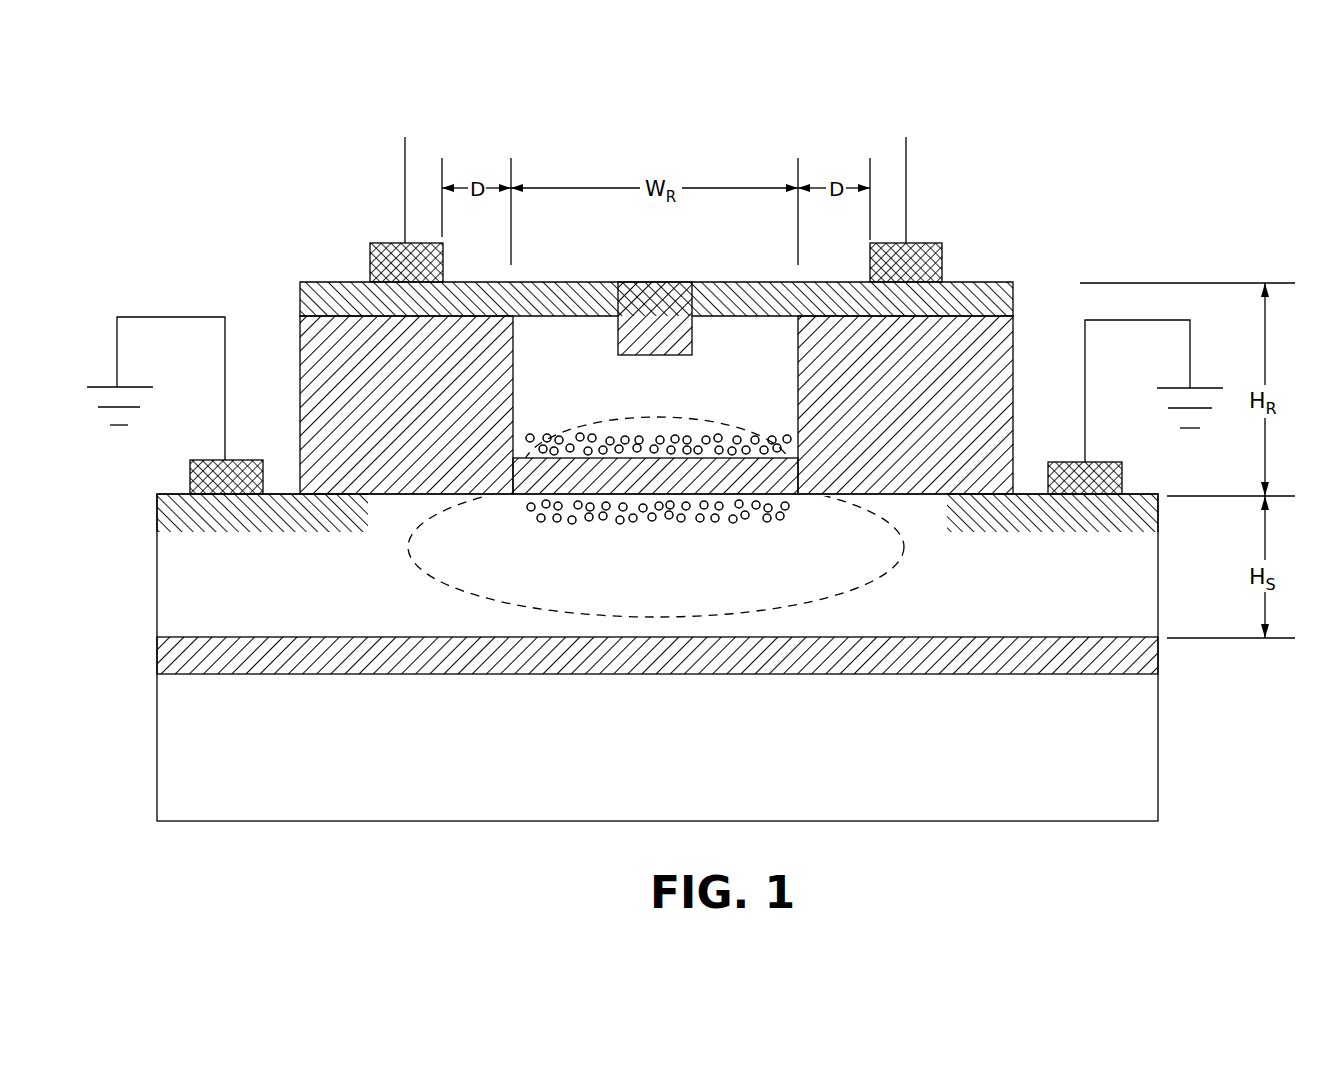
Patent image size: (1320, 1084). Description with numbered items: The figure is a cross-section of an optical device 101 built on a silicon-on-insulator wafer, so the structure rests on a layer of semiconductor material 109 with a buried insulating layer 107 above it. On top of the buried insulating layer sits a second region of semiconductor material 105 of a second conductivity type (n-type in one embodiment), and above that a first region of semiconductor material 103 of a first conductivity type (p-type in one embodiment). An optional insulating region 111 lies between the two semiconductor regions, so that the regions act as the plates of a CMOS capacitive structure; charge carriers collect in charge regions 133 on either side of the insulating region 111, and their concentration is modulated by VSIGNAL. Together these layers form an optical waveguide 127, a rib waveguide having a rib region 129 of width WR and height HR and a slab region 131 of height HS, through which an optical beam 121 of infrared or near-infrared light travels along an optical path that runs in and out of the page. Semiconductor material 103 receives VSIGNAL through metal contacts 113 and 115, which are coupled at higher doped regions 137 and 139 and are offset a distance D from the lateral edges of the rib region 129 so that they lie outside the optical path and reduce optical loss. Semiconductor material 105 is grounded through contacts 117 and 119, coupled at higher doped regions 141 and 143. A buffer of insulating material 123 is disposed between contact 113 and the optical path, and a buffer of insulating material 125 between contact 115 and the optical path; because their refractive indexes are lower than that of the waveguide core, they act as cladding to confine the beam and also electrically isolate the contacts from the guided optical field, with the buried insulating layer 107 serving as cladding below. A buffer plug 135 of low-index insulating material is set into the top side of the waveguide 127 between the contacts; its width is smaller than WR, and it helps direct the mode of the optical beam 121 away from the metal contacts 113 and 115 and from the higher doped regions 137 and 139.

The optical device 101 is at (1068, 132).
The first region of semiconductor material 103 is at (587, 348).
The second region of semiconductor material 105 is at (1145, 570).
The buried insulating layer 107 is at (1158, 652).
The layer of semiconductor material 109 is at (1145, 730).
The insulating region 111 is at (527, 495).
The contact 113 is at (370, 261).
The contact 115 is at (942, 255).
The contact 117 is at (190, 480).
The contact 119 is at (1160, 476).
The optical beam 121 is at (895, 565).
The buffer of insulating material 123 is at (322, 371).
The buffer of insulating material 125 is at (1049, 344).
The optical waveguide 127 is at (734, 346).
The rib region 129 is at (760, 402).
The slab region 131 is at (1050, 624).
The charge regions 133 is at (611, 432).
The buffer plug 135 is at (660, 286).
The higher doped region 137 is at (300, 296).
The higher doped region 139 is at (1049, 282).
The higher doped region 141 is at (160, 516).
The higher doped region 143 is at (1158, 510).